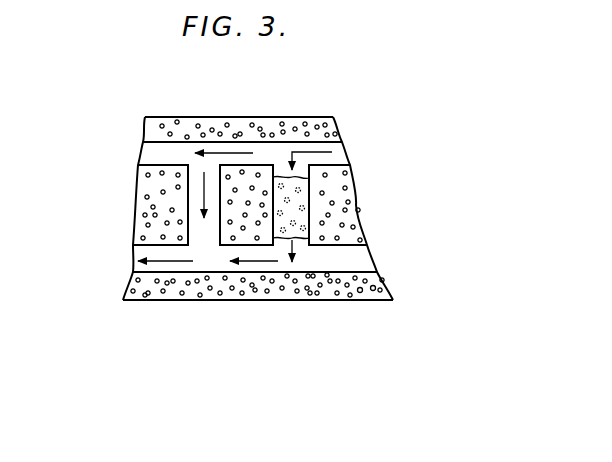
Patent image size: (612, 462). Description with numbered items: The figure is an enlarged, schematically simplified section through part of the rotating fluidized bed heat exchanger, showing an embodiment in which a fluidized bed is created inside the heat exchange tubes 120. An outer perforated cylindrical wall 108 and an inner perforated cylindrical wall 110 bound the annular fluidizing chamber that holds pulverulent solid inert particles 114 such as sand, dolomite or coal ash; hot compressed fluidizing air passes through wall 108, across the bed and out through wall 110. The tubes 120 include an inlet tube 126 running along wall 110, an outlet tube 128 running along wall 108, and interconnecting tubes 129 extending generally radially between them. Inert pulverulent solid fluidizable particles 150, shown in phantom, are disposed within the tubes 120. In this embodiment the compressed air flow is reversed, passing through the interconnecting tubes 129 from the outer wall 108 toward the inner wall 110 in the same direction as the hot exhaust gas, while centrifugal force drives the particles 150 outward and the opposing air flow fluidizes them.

The outer perforated cylindrical wall 108 is at (185, 142).
The inner perforated cylindrical wall 110 is at (218, 300).
The pulverulent solid inert particles 114 is at (360, 293).
The heat exchange tubes 120 is at (225, 148).
The inlet tube 126 is at (360, 258).
The outlet tube 128 is at (311, 143).
The interconnecting tubes 129 is at (300, 172).
The inert pulverulent solid fluidizable particles 150 is at (303, 203).